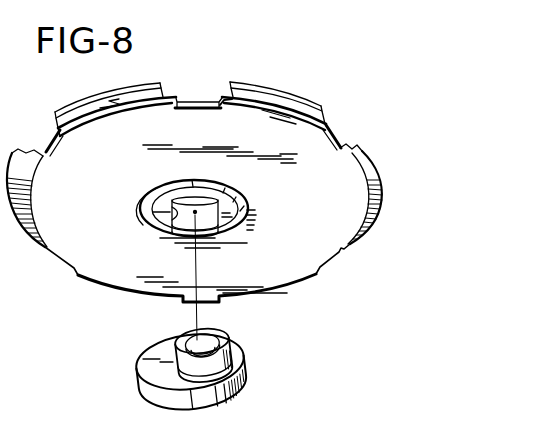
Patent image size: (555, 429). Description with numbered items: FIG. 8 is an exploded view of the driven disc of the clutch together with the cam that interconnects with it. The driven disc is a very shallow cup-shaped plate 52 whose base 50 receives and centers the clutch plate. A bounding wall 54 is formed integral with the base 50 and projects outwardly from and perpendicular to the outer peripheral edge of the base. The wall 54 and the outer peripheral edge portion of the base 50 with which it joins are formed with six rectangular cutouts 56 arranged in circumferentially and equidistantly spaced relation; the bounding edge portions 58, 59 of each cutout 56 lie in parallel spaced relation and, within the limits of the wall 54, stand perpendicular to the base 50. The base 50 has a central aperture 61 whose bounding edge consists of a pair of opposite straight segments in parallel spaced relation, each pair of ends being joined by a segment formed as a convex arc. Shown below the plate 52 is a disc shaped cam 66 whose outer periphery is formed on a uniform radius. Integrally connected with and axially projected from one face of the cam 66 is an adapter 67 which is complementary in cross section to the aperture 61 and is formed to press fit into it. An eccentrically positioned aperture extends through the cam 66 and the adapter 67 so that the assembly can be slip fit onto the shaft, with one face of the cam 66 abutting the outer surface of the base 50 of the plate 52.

The base 50 is at (262, 127).
The shallow cup-shaped plate 52 is at (121, 189).
The bounding wall 54 is at (131, 100).
The rectangular cutout 56 is at (48, 140).
The bounding edge portion 58 is at (182, 98).
The bounding edge portion 59 is at (213, 98).
The central aperture 61 is at (155, 227).
The disc shaped cam 66 is at (134, 366).
The adapter 67 is at (221, 337).